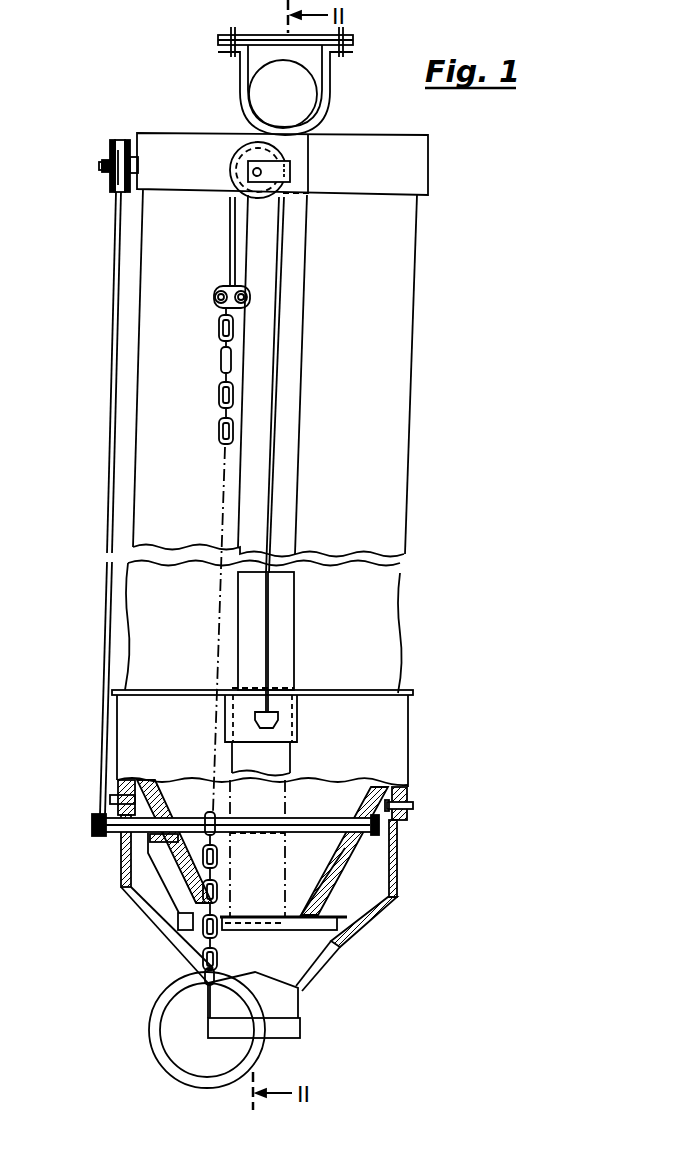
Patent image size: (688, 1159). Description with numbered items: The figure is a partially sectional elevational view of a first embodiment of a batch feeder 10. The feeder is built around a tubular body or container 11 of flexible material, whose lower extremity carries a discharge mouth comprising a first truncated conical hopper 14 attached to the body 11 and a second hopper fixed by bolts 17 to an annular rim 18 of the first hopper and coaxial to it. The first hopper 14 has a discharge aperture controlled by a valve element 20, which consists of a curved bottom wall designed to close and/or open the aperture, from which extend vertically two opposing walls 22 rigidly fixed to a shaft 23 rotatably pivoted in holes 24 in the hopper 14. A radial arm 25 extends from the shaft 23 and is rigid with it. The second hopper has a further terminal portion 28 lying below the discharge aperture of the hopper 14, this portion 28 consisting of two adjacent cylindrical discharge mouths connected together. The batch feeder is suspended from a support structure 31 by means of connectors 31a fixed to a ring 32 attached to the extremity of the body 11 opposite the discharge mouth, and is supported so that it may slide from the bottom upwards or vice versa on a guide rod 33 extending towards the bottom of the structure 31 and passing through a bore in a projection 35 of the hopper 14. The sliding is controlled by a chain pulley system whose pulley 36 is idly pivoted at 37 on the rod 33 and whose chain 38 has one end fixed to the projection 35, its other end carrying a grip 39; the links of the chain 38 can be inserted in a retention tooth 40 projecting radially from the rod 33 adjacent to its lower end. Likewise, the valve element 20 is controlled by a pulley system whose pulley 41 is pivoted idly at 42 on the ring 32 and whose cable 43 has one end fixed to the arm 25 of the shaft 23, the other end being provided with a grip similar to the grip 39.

The batch feeder 10 is at (304, 441).
The tubular body 11 is at (408, 498).
The first truncated conical hopper 14 is at (327, 873).
The bolts 17 is at (412, 805).
The annular rim 18 is at (393, 738).
The valve element 20 is at (317, 928).
The opposing walls 22 is at (165, 884).
The shaft 23 is at (330, 836).
The holes 24 is at (170, 825).
The radial arm 25 is at (100, 836).
The terminal portion 28 is at (300, 1005).
The support structure 31 is at (307, 108).
The connectors 31a is at (322, 88).
The ring 32 is at (180, 141).
The guide rod 33 is at (297, 648).
The projection 35 is at (298, 717).
The pulley 36 is at (243, 196).
The pivot 37 is at (250, 191).
The chain 38 is at (222, 398).
The grip 39 is at (158, 1040).
The retention tooth 40 is at (205, 930).
The pulley 41 is at (110, 152).
The pivot 42 is at (102, 168).
The cable 43 is at (109, 430).